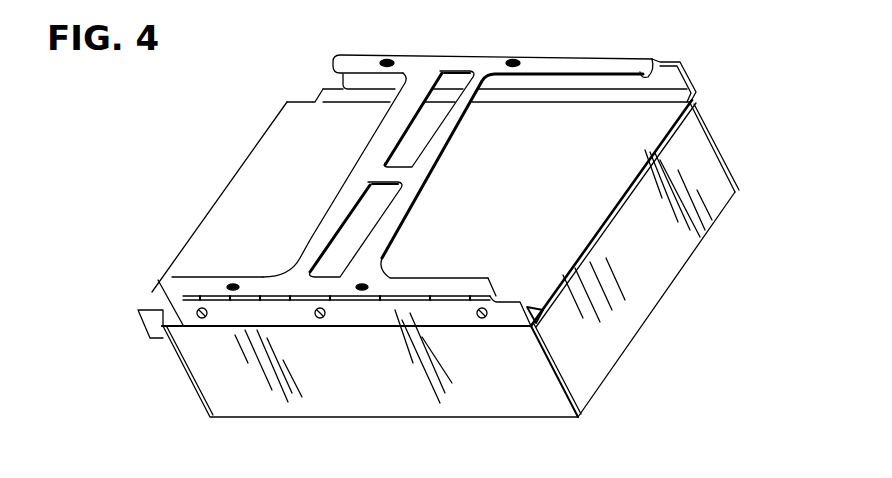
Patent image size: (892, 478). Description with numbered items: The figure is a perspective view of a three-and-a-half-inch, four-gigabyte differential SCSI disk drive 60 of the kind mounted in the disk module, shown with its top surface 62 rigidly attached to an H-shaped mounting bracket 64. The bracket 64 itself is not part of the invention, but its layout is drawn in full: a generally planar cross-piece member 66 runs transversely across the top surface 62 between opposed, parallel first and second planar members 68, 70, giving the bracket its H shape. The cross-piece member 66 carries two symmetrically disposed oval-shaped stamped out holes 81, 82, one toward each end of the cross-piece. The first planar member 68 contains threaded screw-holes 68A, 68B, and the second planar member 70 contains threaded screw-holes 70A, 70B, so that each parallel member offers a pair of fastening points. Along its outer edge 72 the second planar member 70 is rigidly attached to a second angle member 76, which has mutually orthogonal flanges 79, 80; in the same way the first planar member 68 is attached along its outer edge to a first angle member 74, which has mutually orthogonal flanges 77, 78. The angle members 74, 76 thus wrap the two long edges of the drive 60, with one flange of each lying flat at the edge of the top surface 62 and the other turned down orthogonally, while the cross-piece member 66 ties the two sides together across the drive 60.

The disk drive 60 is at (156, 168).
The top surface 62 is at (434, 178).
The H-shaped mounting bracket 64 is at (322, 209).
The cross-piece member 66 is at (368, 147).
The first planar member 68 is at (192, 285).
The threaded screw-hole 68A is at (233, 284).
The threaded screw-hole 68B is at (366, 285).
The second planar member 70 is at (587, 78).
The threaded screw-hole 70A is at (387, 57).
The threaded screw-hole 70B is at (513, 57).
The outer edge 72 is at (606, 60).
The first angle member 74 is at (170, 303).
The second angle member 76 is at (700, 69).
The flange 77 is at (507, 297).
The flange 78 is at (532, 305).
The flange 79 is at (673, 57).
The flange 80 is at (670, 93).
The oval-shaped stamped out hole 81 is at (384, 214).
The oval-shaped stamped out hole 82 is at (424, 143).